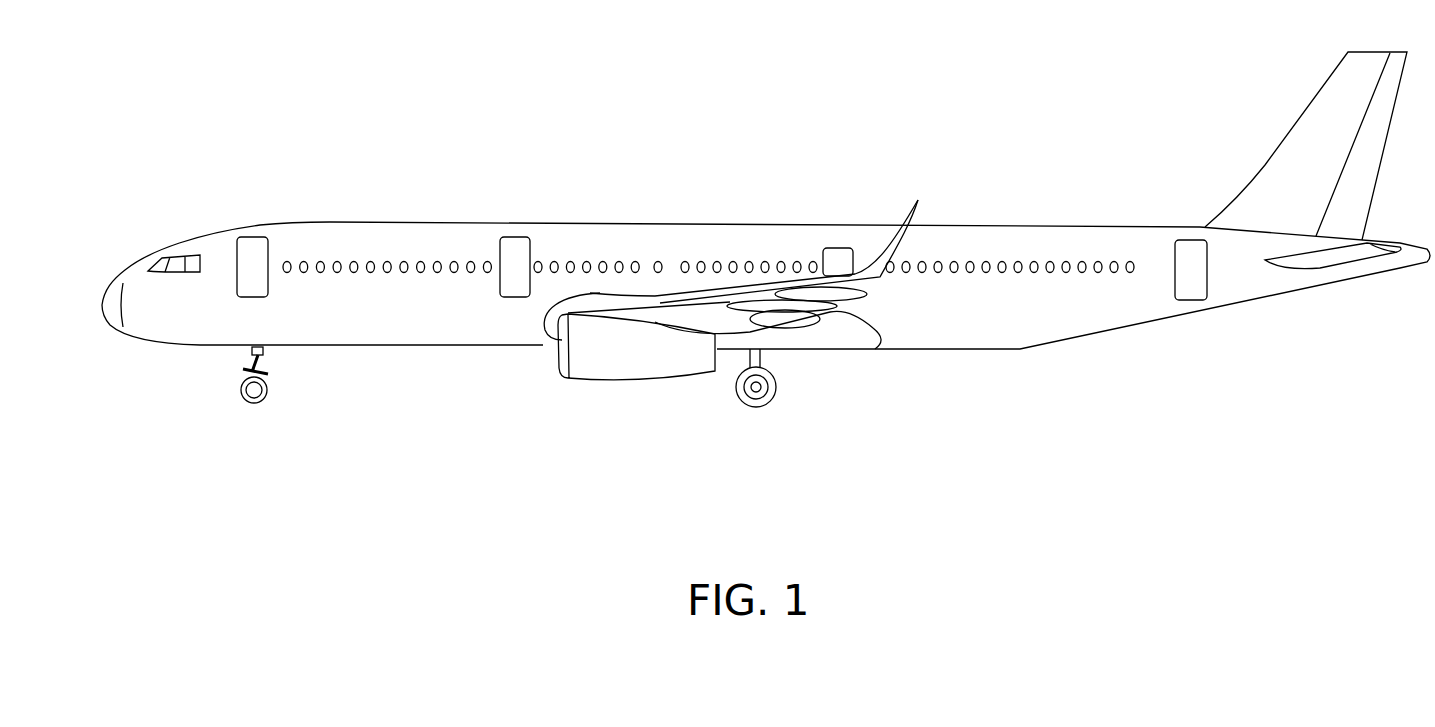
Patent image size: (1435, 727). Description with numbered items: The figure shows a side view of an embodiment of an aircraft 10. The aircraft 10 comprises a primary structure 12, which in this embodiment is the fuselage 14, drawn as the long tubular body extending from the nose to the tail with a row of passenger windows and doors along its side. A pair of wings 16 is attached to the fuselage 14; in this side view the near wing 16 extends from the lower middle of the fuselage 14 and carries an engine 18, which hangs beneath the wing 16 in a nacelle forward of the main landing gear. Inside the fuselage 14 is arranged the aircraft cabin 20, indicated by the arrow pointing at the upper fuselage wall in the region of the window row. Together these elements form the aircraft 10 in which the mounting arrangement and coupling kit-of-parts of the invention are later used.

The aircraft 10 is at (475, 122).
The primary structure 12 is at (556, 233).
The fuselage 14 is at (640, 233).
The wings 16 is at (773, 283).
The engine 18 is at (632, 360).
The aircraft cabin 20 is at (458, 228).